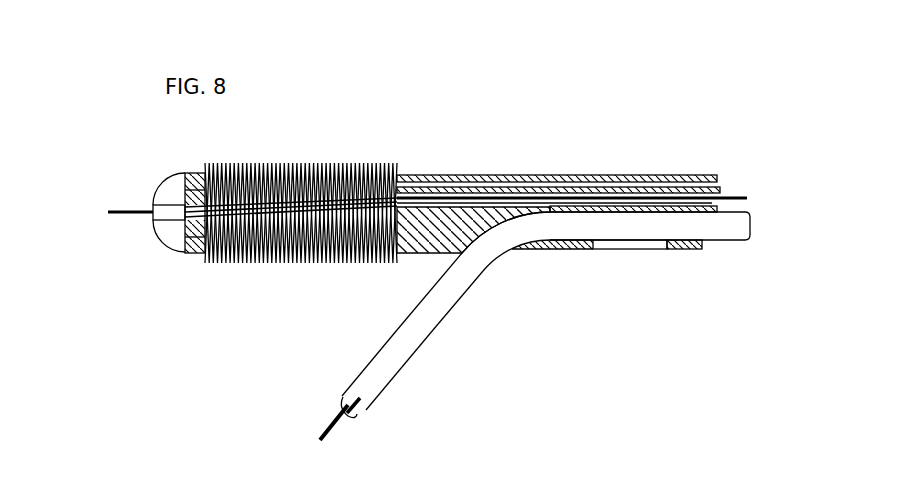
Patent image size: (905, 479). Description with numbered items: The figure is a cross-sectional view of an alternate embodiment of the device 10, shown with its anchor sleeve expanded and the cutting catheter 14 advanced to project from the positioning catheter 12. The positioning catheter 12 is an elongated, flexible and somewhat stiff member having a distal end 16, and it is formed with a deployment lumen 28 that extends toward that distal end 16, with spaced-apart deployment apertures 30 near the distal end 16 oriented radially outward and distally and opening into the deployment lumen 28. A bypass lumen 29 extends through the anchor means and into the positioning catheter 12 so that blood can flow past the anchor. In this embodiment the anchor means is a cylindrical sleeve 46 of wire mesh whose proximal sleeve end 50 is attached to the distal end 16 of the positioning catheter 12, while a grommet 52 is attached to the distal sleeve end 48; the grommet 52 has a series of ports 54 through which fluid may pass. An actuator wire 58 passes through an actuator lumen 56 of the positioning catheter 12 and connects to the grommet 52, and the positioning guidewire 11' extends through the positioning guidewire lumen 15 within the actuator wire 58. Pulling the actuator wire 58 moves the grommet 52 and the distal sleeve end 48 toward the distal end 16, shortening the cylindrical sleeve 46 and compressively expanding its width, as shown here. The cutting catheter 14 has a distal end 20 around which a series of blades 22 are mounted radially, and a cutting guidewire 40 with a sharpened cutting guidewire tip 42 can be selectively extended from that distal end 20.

The device 10 is at (436, 98).
The positioning guidewire 11' is at (115, 244).
The positioning catheter 12 is at (498, 176).
The cutting catheter 14 is at (682, 225).
The positioning guidewire lumen 15 is at (728, 195).
The distal end 16 is at (430, 176).
The distal end 20 is at (378, 383).
The blades 22 is at (642, 252).
The deployment lumen 28 is at (570, 243).
The bypass lumen 29 is at (472, 176).
The deployment apertures 30 is at (492, 245).
The cutting guidewire 40 is at (340, 425).
The cutting guidewire tip 42 is at (320, 440).
The cylindrical sleeve 46 is at (257, 263).
The distal sleeve end 48 is at (228, 263).
The proximal sleeve end 50 is at (387, 260).
The grommet 52 is at (192, 258).
The ports 54 is at (185, 175).
The actuator lumen 56 is at (617, 176).
The actuator wire 58 is at (300, 165).